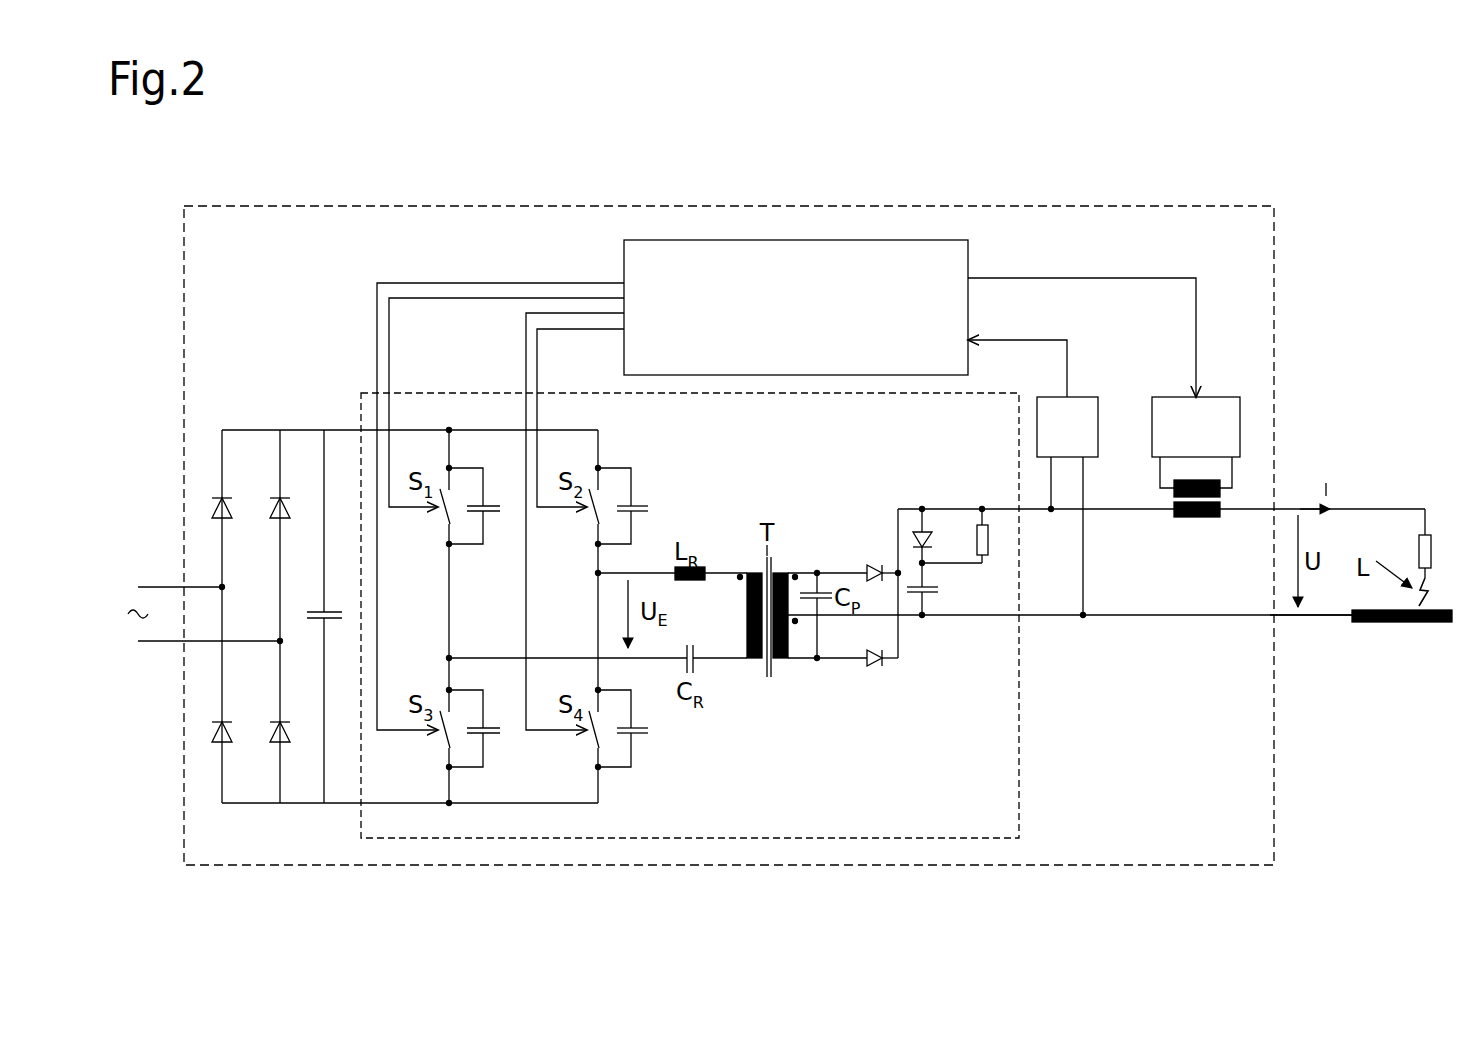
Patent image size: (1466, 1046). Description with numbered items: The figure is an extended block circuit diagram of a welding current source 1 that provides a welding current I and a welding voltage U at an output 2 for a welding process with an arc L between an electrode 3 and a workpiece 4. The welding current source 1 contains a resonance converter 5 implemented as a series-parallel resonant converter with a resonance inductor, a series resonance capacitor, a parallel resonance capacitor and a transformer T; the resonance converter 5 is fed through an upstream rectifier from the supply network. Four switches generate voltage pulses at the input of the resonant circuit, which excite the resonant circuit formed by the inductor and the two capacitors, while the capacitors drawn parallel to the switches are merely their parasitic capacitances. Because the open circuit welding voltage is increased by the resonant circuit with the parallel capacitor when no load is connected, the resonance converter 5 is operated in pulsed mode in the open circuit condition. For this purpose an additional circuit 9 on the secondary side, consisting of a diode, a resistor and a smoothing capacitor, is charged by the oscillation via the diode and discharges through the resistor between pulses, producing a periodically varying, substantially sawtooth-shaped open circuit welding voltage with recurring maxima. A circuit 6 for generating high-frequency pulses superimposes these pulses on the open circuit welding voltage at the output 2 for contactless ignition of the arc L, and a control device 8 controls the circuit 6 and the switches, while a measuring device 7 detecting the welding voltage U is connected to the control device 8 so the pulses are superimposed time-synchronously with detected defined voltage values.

The welding current source 1 is at (1290, 199).
The output 2 is at (1290, 621).
The electrode 3 is at (1431, 566).
The workpiece 4 is at (1429, 626).
The resonance converter 5 is at (690, 615).
The circuit for generating high-frequency pulses 6 is at (1196, 457).
The measuring device 7 is at (1067, 506).
The control device 8 is at (786, 485).
The additional circuit to maintain the open circuit welding voltage 9 is at (980, 584).